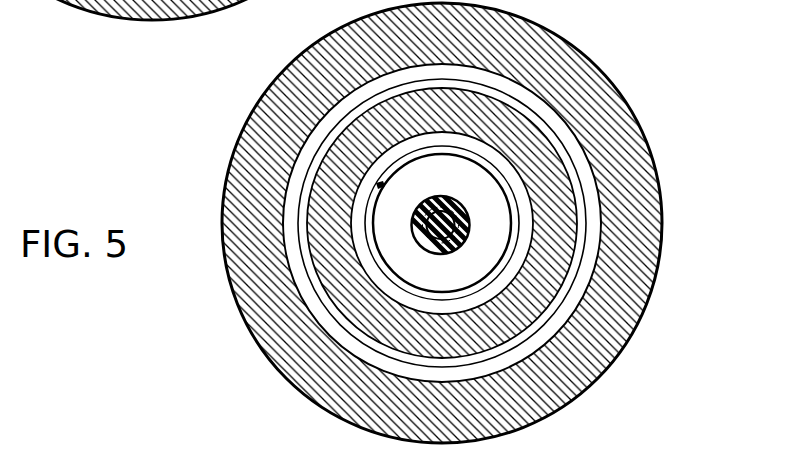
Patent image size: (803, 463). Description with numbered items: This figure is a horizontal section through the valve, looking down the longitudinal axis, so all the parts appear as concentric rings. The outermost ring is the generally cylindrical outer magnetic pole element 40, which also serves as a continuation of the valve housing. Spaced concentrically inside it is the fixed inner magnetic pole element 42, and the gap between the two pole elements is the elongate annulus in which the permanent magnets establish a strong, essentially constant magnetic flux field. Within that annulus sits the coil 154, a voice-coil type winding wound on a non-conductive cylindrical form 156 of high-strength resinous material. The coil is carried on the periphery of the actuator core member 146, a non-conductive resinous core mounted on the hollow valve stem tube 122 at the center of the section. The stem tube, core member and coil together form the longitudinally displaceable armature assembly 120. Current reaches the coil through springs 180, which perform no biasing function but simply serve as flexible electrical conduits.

The outer magnetic pole element 40 is at (517, 33).
The coil 154 is at (547, 110).
The cylindrical form 156 is at (550, 135).
The inner magnetic pole element 42 is at (553, 180).
The actuator core member 146 is at (470, 220).
The hollow valve stem tube 122 is at (470, 237).
The springs 180 is at (373, 200).
The armature assembly 120 is at (395, 238).